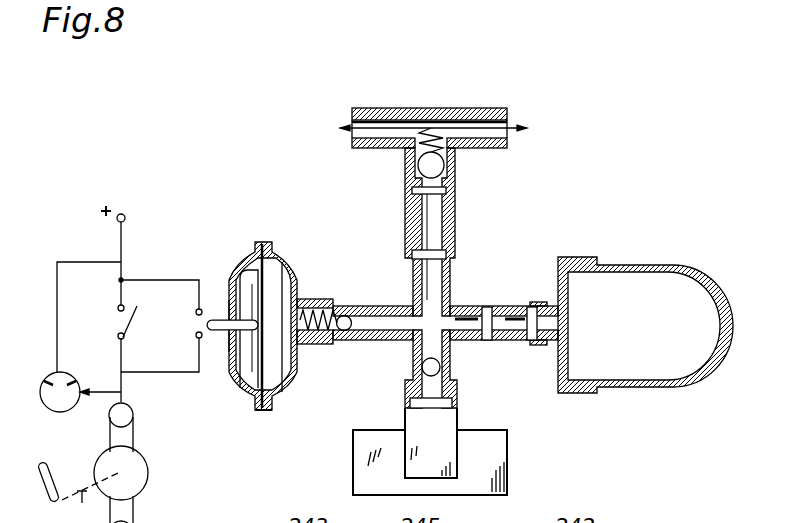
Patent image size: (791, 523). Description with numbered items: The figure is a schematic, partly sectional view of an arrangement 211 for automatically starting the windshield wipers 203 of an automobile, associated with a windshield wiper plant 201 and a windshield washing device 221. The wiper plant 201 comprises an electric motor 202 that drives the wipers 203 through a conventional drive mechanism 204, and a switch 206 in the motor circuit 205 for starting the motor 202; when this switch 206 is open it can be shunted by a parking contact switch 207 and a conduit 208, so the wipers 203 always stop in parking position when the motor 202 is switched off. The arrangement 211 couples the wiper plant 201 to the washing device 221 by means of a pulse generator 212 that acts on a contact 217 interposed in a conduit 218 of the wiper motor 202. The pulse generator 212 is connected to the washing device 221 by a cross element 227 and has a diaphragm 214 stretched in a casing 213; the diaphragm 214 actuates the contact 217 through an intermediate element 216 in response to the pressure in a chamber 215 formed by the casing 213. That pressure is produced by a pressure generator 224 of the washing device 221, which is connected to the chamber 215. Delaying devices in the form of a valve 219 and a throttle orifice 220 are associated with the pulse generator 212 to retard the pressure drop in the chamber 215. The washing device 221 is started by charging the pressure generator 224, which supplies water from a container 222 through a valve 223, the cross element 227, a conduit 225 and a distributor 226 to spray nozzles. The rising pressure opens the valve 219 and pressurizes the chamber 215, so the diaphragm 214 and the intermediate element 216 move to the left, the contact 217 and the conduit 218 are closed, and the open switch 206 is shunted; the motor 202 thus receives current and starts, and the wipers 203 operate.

The windshield wiper plant 201 is at (121, 212).
The electric motor 202 is at (97, 462).
The windshield wipers 203 is at (37, 463).
The drive mechanism 204 is at (91, 497).
The motor circuit 205 is at (119, 252).
The switch 206 is at (135, 323).
The parking contact switch 207 is at (43, 373).
The conduit 208 is at (76, 261).
The arrangement for automatic starting 211 is at (275, 415).
The pulse generator 212 is at (292, 386).
The casing 213 is at (270, 402).
The diaphragm 214 is at (263, 288).
The chamber 215 is at (282, 290).
The intermediate element 216 is at (216, 336).
The contact 217 is at (214, 318).
The conduit 218 is at (163, 279).
The valve 219 is at (360, 345).
The throttle orifice 220 is at (309, 346).
The windshield washing device 221 is at (457, 280).
The container 222 is at (488, 429).
The valve 223 is at (448, 368).
The pressure generator 224 is at (617, 259).
The conduit 225 is at (453, 223).
The distributor 226 is at (420, 107).
The cross element 227 is at (453, 307).